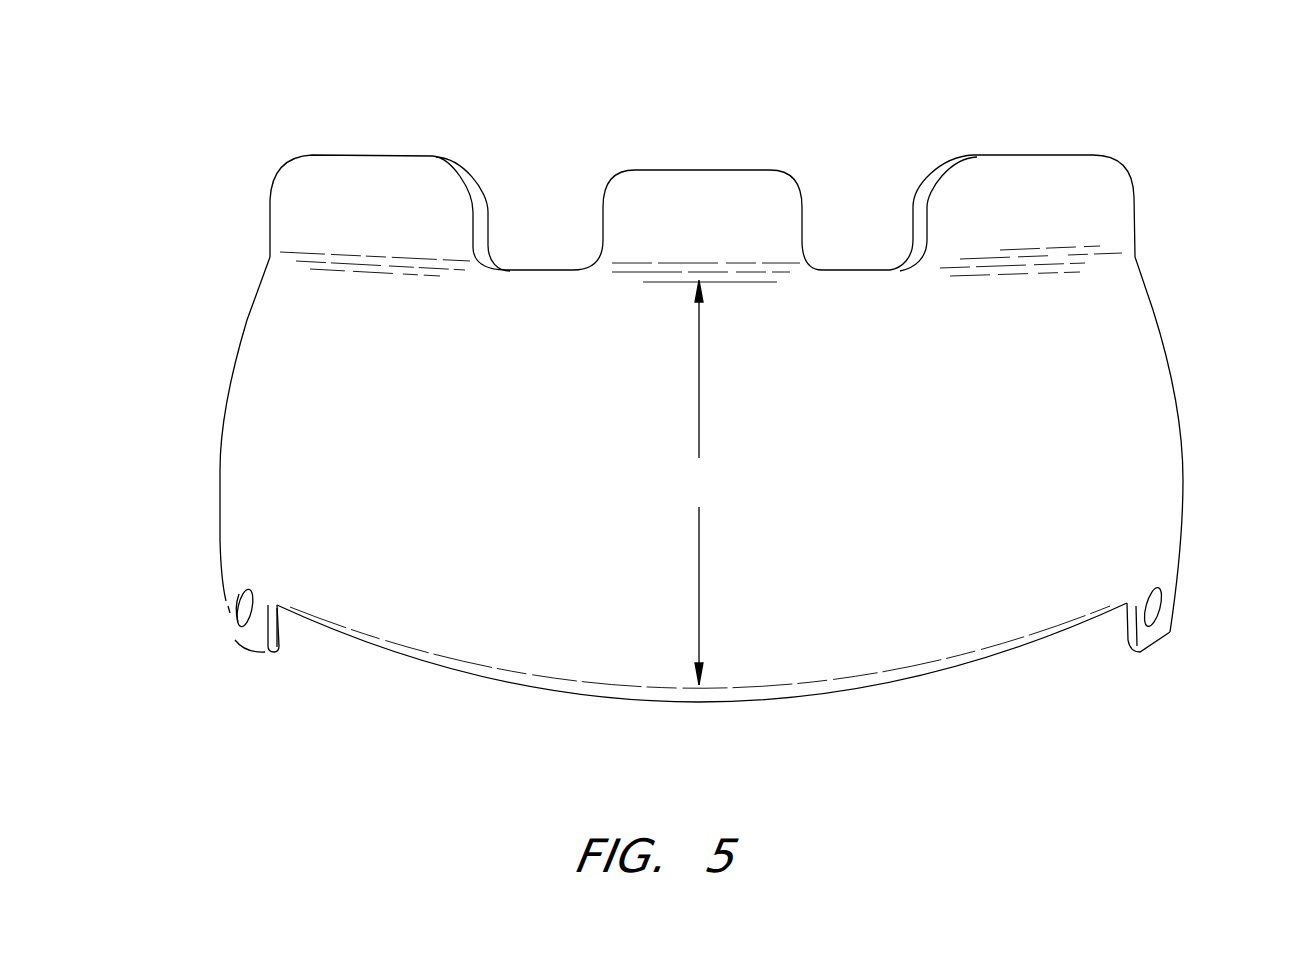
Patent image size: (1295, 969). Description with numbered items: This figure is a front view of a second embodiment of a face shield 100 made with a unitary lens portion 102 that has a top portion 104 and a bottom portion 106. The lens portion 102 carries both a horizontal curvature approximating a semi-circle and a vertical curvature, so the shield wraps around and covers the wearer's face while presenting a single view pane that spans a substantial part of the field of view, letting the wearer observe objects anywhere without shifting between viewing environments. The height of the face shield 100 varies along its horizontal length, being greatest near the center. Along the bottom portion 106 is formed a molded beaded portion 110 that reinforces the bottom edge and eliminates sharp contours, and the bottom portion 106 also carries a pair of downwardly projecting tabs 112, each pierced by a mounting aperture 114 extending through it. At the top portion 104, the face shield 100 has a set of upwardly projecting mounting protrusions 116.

The face shield 100 is at (1075, 75).
The lens portion 102 is at (1066, 375).
The top portion 104 is at (1113, 292).
The bottom portion 106 is at (1152, 555).
The molded beaded portion 110 is at (475, 667).
The downwardly projecting tabs 112 is at (250, 655).
The mounting aperture 114 is at (240, 612).
The mounting protrusions 116 is at (405, 193).